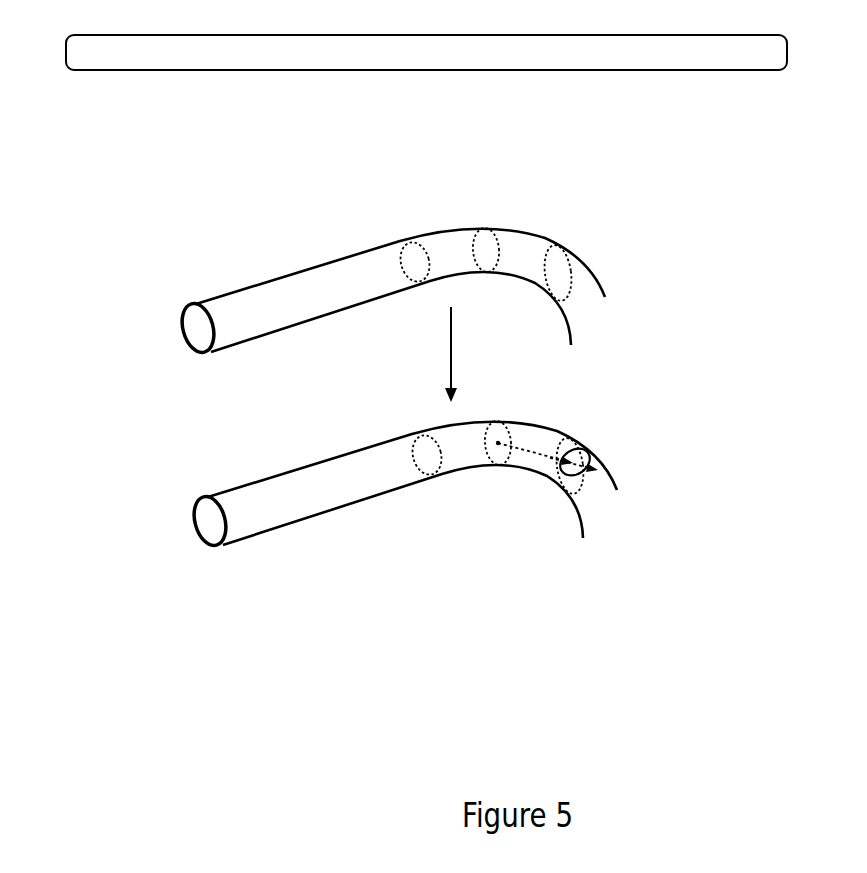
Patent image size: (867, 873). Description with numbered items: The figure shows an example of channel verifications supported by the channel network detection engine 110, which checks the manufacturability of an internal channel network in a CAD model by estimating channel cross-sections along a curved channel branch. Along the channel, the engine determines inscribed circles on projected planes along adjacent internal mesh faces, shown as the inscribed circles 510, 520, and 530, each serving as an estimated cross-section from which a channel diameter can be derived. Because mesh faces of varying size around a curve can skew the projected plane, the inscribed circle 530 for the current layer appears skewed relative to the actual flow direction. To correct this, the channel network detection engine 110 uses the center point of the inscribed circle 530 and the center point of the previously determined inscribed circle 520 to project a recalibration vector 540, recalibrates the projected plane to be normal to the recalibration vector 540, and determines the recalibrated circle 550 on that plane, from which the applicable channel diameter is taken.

The channel network detection engine 110 is at (772, 64).
The inscribed circle 510 is at (403, 244).
The inscribed circle 520 is at (482, 226).
The inscribed circle 530 is at (551, 249).
The recalibration vector 540 is at (524, 462).
The recalibrated circle 550 is at (597, 442).